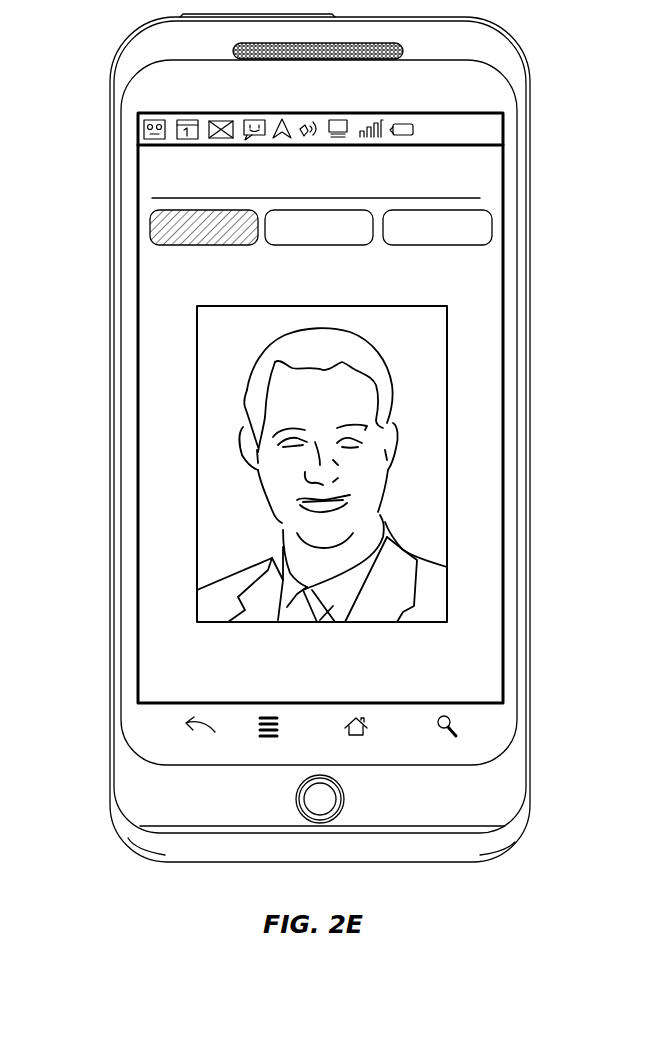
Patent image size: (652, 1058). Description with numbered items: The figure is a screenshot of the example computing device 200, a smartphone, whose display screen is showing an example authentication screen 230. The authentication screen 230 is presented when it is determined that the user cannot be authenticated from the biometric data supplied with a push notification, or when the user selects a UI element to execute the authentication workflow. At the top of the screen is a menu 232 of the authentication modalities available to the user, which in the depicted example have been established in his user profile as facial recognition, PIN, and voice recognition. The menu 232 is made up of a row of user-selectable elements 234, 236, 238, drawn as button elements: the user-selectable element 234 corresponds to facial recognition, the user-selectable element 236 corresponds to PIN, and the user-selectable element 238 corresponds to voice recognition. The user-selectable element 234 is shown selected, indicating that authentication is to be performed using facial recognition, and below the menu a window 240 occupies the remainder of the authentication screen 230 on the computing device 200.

The computing device 200 is at (530, 90).
The authentication screen 230 is at (478, 184).
The menu 232 is at (535, 198).
The user-selectable element 234 is at (150, 224).
The user-selectable element 236 is at (310, 245).
The user-selectable element 238 is at (425, 245).
The face capture image window 240 is at (195, 427).